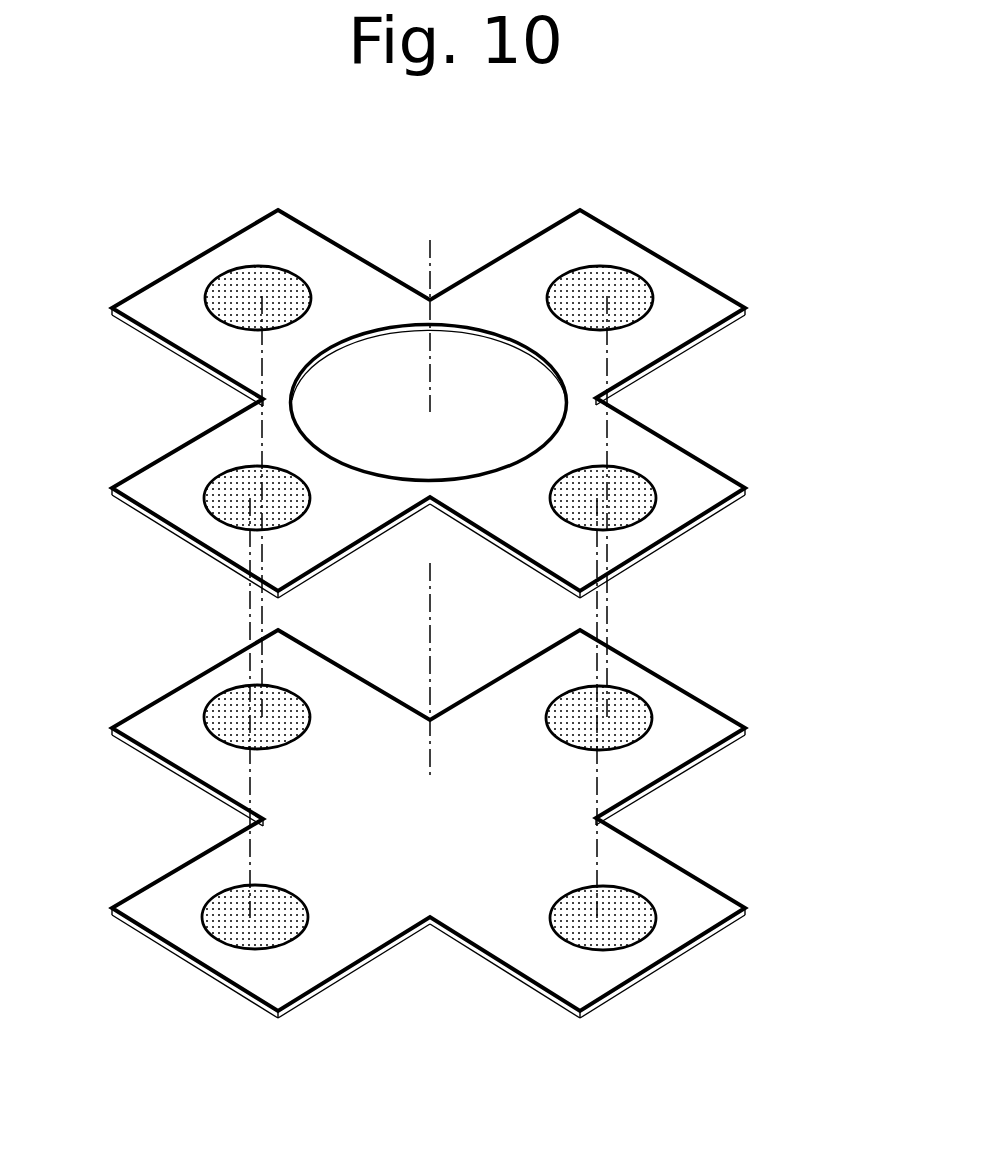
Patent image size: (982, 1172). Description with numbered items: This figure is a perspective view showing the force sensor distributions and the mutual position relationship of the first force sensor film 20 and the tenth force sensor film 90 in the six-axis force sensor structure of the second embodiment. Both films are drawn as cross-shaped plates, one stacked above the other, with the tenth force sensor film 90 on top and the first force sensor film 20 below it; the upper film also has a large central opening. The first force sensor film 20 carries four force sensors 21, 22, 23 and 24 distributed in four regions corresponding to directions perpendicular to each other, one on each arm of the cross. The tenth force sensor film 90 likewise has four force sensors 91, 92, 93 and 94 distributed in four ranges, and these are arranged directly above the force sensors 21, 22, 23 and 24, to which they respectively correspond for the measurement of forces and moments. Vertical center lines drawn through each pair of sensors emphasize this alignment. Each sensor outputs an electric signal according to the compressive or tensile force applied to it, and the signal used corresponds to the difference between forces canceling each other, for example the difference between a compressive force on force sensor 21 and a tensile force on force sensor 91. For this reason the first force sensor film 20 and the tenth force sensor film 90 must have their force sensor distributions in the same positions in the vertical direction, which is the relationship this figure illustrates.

The tenth force sensor film 90 is at (681, 358).
The force sensor 91 is at (640, 493).
The force sensor 92 is at (615, 282).
The force sensor 93 is at (233, 290).
The force sensor 94 is at (223, 494).
The first force sensor film 20 is at (683, 862).
The force sensor 21 is at (637, 922).
The force sensor 22 is at (628, 710).
The force sensor 23 is at (225, 712).
The force sensor 24 is at (217, 917).